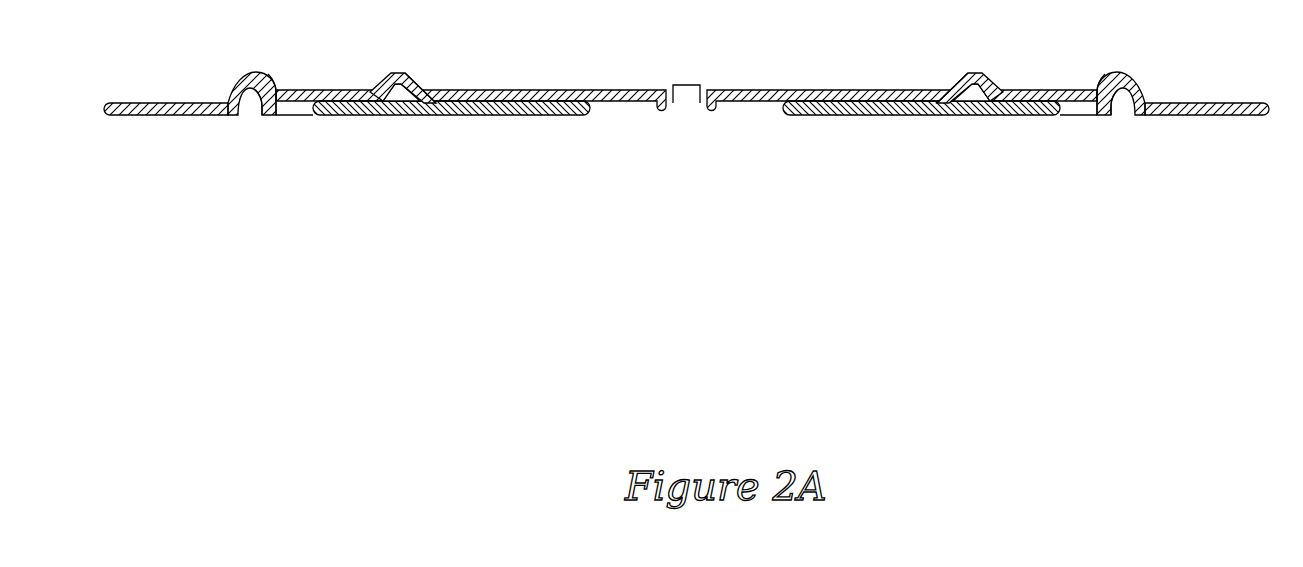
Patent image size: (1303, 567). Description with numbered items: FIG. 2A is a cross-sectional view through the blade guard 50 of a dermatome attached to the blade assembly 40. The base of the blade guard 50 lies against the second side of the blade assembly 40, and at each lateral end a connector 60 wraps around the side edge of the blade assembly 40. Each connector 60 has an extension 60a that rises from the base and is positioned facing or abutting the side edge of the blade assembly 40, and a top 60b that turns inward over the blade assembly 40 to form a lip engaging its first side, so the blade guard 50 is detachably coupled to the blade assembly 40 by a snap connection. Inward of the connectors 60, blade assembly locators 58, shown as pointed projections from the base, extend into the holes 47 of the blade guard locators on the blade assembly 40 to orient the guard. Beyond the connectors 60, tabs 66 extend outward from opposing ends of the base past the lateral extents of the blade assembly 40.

The blade assembly 40 is at (555, 92).
The hole 47 is at (422, 88).
The blade guard 50 is at (540, 116).
The blade assembly locator 58 is at (400, 74).
The connector 60 is at (243, 80).
The extension 60a is at (258, 105).
The top 60b is at (271, 80).
The tab 66 is at (143, 117).